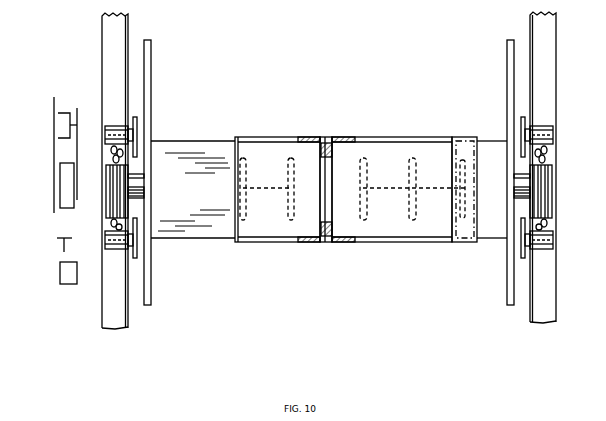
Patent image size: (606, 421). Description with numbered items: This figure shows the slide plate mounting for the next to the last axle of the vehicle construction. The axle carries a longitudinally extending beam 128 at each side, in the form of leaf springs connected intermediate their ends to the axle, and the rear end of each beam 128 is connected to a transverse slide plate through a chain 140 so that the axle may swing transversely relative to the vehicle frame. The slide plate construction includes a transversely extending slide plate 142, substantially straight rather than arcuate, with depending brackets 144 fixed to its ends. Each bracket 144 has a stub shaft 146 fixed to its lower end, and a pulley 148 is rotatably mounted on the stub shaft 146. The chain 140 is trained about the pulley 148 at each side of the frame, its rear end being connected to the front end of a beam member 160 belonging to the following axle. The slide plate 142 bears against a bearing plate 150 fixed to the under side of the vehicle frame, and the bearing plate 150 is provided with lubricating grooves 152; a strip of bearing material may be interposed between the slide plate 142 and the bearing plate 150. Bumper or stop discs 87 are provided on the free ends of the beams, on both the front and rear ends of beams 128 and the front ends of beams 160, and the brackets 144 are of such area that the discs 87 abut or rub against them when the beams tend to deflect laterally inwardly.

The longitudinally extending beam 128 is at (108, 90).
The beam member 160 is at (127, 322).
The depending bracket 144 is at (150, 270).
The bumper or stop disc 87 is at (140, 119).
The chain 140 is at (108, 146).
The pulley 148 is at (103, 204).
The stub shaft 146 is at (138, 192).
The transverse slide plate 142 is at (497, 237).
The bearing plate 150 is at (400, 225).
The lubricating groove 152 is at (368, 200).